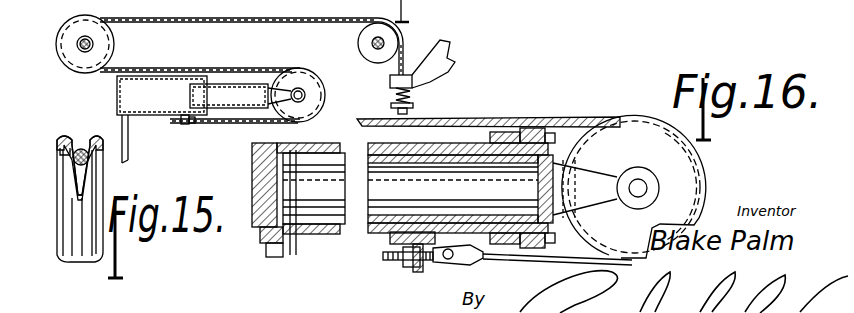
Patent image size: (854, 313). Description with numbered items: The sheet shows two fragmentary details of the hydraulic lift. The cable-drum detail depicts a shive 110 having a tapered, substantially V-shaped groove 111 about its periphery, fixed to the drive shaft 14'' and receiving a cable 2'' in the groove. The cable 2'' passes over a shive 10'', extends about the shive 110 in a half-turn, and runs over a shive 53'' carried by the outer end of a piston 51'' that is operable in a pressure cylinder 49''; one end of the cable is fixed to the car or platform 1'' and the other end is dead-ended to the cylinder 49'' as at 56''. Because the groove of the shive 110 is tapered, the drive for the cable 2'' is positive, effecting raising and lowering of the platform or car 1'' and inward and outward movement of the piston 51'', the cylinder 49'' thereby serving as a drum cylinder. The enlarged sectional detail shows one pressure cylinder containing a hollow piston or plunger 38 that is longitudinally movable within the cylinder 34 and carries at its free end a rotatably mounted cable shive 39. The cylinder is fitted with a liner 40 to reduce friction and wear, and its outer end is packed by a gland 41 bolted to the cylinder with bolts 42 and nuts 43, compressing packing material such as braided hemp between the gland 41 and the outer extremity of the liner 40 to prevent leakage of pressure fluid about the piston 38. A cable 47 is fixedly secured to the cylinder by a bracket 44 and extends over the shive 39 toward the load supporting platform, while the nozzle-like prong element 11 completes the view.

In FIG. 15, the shive 110 is at (92, 32).
In FIG. 15, the cable 2'' is at (245, 96).
In FIG. 15, the drive shaft 14'' is at (111, 44).
In FIG. 15, the shive 10'' is at (408, 31).
In FIG. 15, the shive 53'' is at (320, 95).
In FIG. 15, the piston 51'' is at (250, 75).
In FIG. 15, the pressure cylinder 49'' is at (162, 119).
In FIG. 15, the cable dead-end 56'' is at (203, 136).
In FIG. 15, the platform or car 1'' is at (440, 64).
In FIG. 15, the groove 111 is at (414, 96).
In FIG. 15, the nozzle prongs 11 is at (79, 146).
In FIG. 16, the liner 40 is at (324, 232).
In FIG. 16, the cylinder 34 is at (374, 232).
In FIG. 16, the piston or plunger 38 is at (458, 178).
In FIG. 16, the bolts 42 is at (529, 130).
In FIG. 16, the nuts 43 is at (548, 134).
In FIG. 16, the brackets 44 is at (411, 268).
In FIG. 16, the gland 41 is at (553, 153).
In FIG. 16, the cable 47 is at (602, 123).
In FIG. 16, the cable shive 39 is at (680, 167).